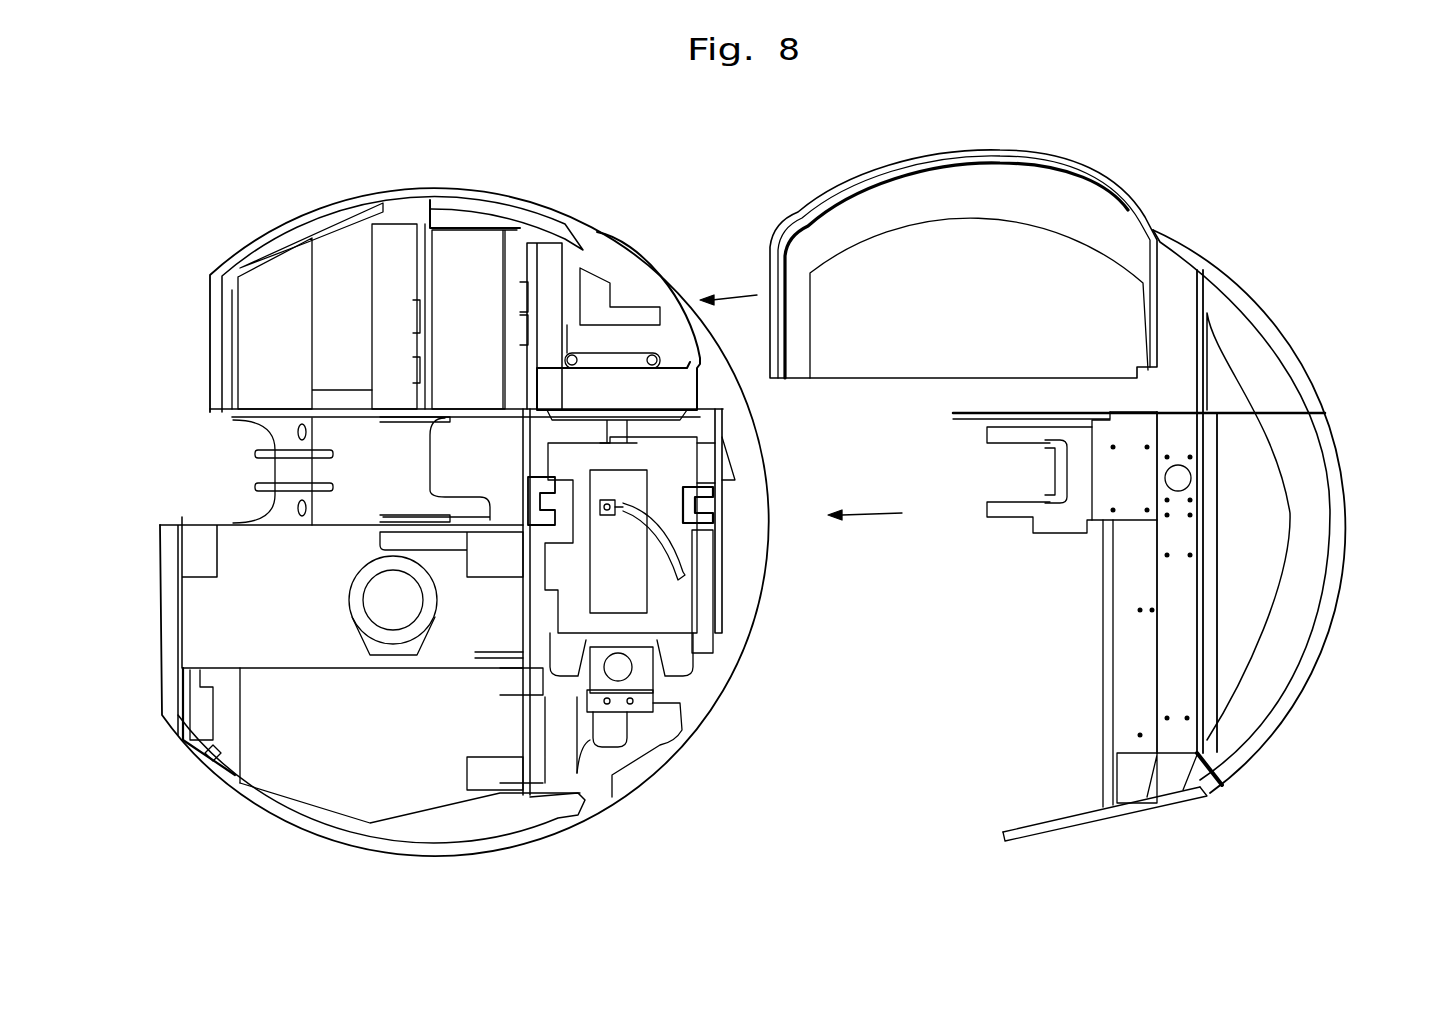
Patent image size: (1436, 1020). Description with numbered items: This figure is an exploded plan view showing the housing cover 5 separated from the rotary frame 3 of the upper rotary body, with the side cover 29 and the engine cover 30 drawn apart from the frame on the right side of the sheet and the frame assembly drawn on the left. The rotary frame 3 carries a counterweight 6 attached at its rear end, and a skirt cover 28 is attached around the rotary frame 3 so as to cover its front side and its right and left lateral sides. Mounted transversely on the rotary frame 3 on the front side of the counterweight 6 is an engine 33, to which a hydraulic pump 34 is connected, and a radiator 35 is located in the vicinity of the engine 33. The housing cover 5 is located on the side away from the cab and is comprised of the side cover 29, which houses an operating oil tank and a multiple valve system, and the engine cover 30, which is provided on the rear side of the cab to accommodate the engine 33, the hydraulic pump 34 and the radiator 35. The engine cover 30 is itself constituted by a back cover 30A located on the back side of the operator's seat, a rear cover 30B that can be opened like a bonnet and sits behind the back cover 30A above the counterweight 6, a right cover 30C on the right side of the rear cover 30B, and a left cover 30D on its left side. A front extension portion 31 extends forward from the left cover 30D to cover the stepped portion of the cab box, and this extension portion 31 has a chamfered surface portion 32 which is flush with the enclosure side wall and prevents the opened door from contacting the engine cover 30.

The rotary frame 3 is at (258, 462).
The housing cover 5 is at (1183, 535).
The counterweight 6 is at (733, 643).
The skirt cover 28 is at (335, 845).
The side cover 29 is at (996, 183).
The engine cover 30 is at (1342, 457).
The back cover 30A is at (1108, 565).
The rear cover 30B is at (1342, 522).
The right cover 30C is at (1272, 318).
The left cover 30D is at (1205, 788).
The front extension portion 31 is at (1065, 830).
The chamfered surface portion 32 is at (1100, 818).
The engine 33 is at (667, 528).
The hydraulic pump 34 is at (620, 728).
The radiator 35 is at (635, 355).